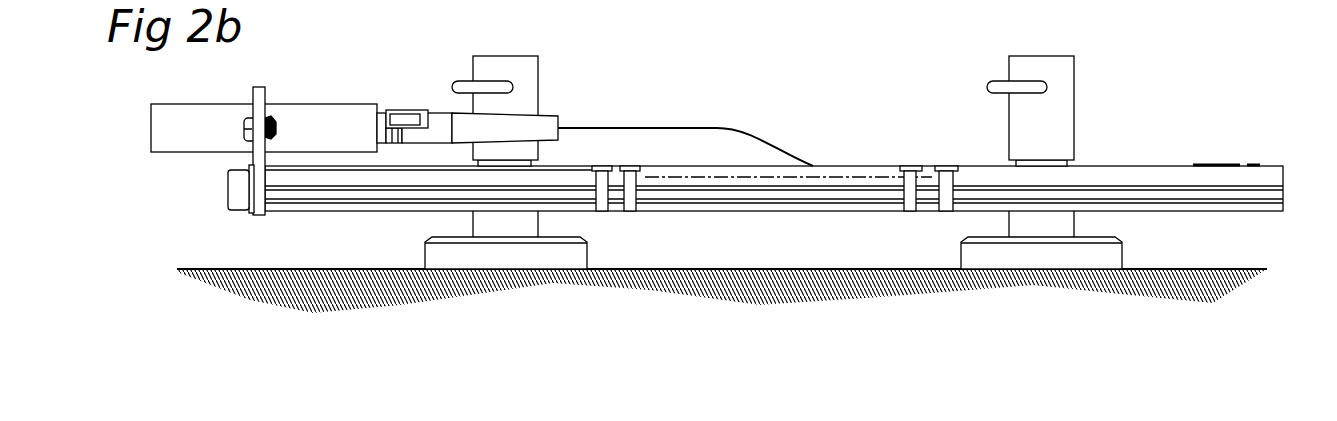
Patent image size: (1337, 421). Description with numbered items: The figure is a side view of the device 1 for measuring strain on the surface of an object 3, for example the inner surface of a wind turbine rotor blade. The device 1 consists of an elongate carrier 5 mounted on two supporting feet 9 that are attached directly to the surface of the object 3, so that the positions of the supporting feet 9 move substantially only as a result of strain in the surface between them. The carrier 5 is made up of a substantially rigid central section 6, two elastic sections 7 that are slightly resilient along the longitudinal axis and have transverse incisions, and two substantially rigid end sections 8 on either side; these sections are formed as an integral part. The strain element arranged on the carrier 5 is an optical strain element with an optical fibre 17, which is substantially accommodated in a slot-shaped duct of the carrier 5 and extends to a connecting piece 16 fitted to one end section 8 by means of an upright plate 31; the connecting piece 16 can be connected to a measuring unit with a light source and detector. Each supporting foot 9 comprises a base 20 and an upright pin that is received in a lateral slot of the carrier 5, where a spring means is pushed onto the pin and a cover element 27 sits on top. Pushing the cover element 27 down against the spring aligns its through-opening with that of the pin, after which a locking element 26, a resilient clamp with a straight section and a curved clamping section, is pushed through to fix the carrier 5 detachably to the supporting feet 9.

The device 1 is at (1188, 150).
The object 3 is at (782, 288).
The carrier 5 is at (1250, 153).
The central section 6 is at (823, 173).
The elastic section 7 is at (614, 195).
The end section 8 is at (318, 180).
The supporting foot 9 is at (414, 254).
The second connecting piece 16 is at (181, 122).
The optical fibre 17 is at (642, 123).
The base 20 is at (498, 258).
The locking element 26 is at (455, 80).
The cover element 27 is at (520, 73).
The upright plate 31 is at (238, 187).